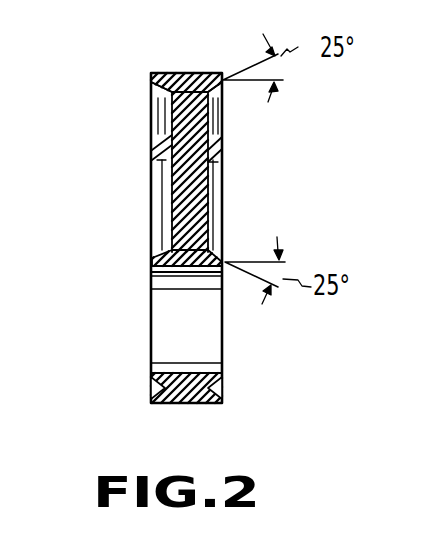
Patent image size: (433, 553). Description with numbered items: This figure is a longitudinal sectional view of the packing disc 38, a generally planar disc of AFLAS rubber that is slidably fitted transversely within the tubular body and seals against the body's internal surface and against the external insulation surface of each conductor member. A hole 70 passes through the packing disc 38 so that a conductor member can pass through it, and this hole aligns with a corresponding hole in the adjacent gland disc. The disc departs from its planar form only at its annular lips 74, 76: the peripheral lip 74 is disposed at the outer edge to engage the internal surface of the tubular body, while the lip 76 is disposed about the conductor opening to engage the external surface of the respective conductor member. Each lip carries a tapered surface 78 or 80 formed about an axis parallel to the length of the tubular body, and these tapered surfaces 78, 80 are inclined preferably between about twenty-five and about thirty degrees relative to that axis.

The packing disc 38 is at (134, 200).
The hole 70 is at (158, 300).
The peripheral annular lip 74 is at (155, 76).
The annular lip 76 is at (150, 378).
The tapered surface 78 is at (150, 87).
The tapered surface 80 is at (217, 245).